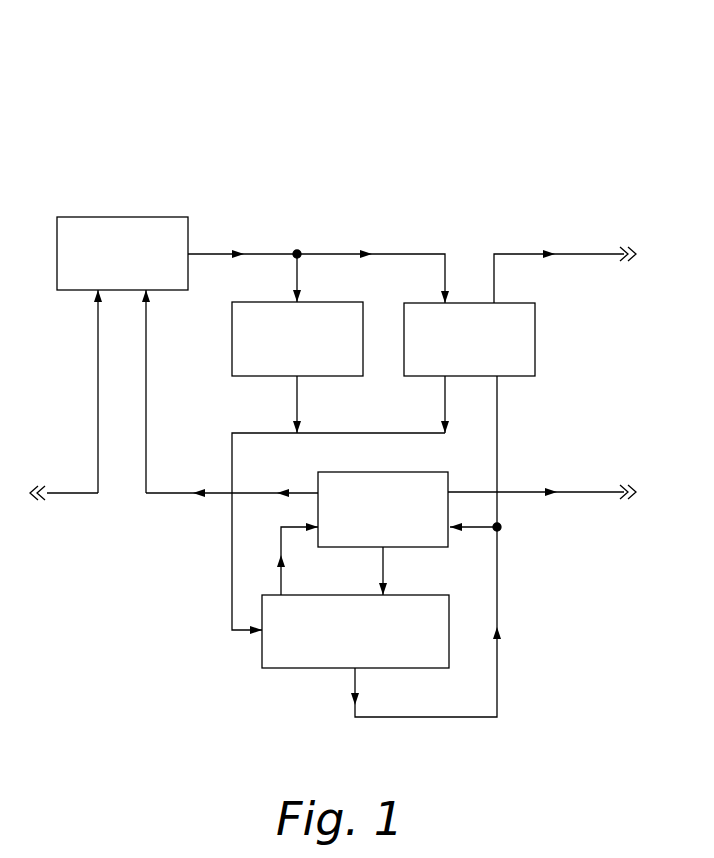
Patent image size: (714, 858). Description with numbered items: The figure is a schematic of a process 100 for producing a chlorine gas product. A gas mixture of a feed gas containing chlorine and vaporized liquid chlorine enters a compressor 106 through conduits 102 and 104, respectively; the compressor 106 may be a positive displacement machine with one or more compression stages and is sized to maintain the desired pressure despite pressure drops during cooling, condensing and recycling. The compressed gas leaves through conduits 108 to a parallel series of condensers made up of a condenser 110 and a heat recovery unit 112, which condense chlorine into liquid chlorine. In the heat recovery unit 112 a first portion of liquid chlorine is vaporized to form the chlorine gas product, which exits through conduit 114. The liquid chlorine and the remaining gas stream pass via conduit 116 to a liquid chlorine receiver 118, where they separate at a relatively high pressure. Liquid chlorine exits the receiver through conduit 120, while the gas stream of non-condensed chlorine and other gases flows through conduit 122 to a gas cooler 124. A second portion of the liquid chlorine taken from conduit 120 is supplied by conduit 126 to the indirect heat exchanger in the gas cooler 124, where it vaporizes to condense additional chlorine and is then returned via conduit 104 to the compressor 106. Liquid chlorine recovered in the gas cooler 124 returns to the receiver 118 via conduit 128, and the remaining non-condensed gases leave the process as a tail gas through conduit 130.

The process 100 is at (92, 60).
The conduit 102 is at (97, 390).
The conduit 104 is at (148, 390).
The compressor 106 is at (172, 212).
The conduits 108 is at (335, 252).
The condenser 110 is at (343, 300).
The heat recovery unit 112 is at (517, 300).
The conduit 114 is at (516, 252).
The conduit 116 is at (343, 431).
The liquid chlorine receiver 118 is at (425, 593).
The conduit 120 is at (418, 715).
The conduit 122 is at (285, 580).
The gas cooler 124 is at (432, 470).
The feed stream to fifth unit 126 is at (482, 528).
The conduit 128 is at (387, 565).
The conduit 130 is at (591, 490).